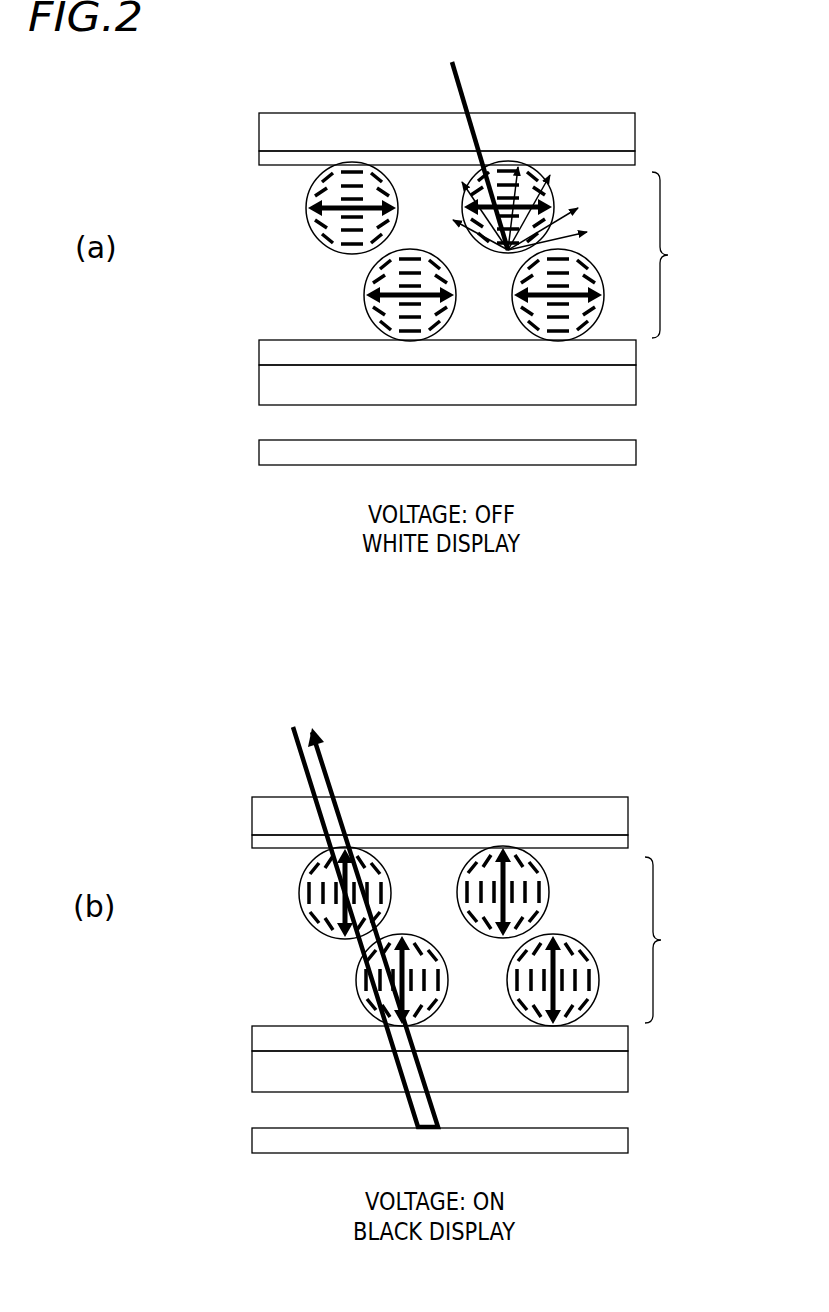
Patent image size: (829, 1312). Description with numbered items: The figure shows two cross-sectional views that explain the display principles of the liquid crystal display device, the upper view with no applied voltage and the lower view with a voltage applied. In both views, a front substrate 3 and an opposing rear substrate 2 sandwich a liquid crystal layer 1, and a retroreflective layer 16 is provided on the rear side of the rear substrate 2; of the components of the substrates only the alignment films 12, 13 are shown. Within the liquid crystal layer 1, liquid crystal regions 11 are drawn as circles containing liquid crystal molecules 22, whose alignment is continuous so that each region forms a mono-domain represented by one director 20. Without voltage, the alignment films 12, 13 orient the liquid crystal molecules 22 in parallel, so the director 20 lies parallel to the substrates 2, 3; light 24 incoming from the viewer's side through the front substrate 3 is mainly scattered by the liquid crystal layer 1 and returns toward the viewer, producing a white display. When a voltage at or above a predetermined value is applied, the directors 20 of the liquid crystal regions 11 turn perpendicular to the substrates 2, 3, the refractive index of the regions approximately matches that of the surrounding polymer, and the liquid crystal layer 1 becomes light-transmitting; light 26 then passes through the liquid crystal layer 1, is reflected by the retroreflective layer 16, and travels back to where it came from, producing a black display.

The liquid crystal layer 1 is at (670, 597).
The rear substrate 2 is at (633, 393).
The front substrate 3 is at (632, 138).
The liquid crystal region 11 is at (556, 196).
The alignment film 12 is at (633, 356).
The alignment film 13 is at (632, 160).
The retroreflective layer 16 is at (633, 456).
The director 20 is at (310, 198).
The liquid crystal molecules 22 is at (377, 223).
The light 24 is at (511, 140).
The light 26 is at (354, 912).